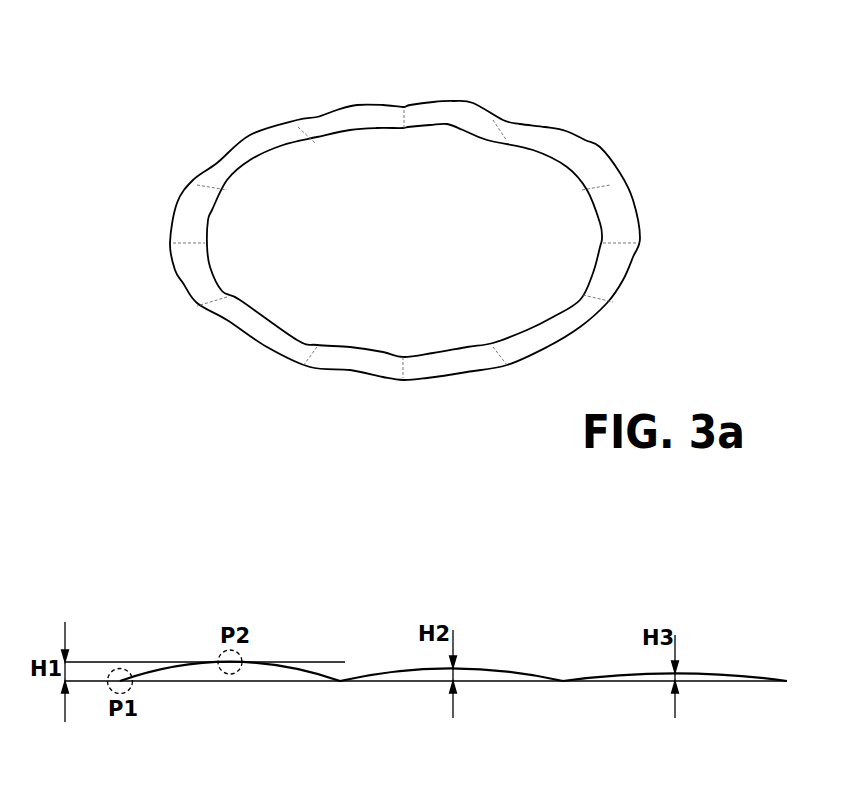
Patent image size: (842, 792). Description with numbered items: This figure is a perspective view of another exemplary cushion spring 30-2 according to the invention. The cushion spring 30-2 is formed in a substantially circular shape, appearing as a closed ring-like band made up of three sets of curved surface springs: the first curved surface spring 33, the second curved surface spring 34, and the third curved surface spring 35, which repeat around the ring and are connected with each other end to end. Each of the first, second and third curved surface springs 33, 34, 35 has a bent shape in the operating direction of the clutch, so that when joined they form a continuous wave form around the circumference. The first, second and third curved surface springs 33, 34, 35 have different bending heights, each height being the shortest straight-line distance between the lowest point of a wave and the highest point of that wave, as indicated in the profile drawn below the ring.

The cushion spring 30-2 is at (297, 97).
The first curved surface spring 33 is at (453, 110).
The second curved surface spring 34 is at (247, 153).
The third curved surface spring 35 is at (357, 120).